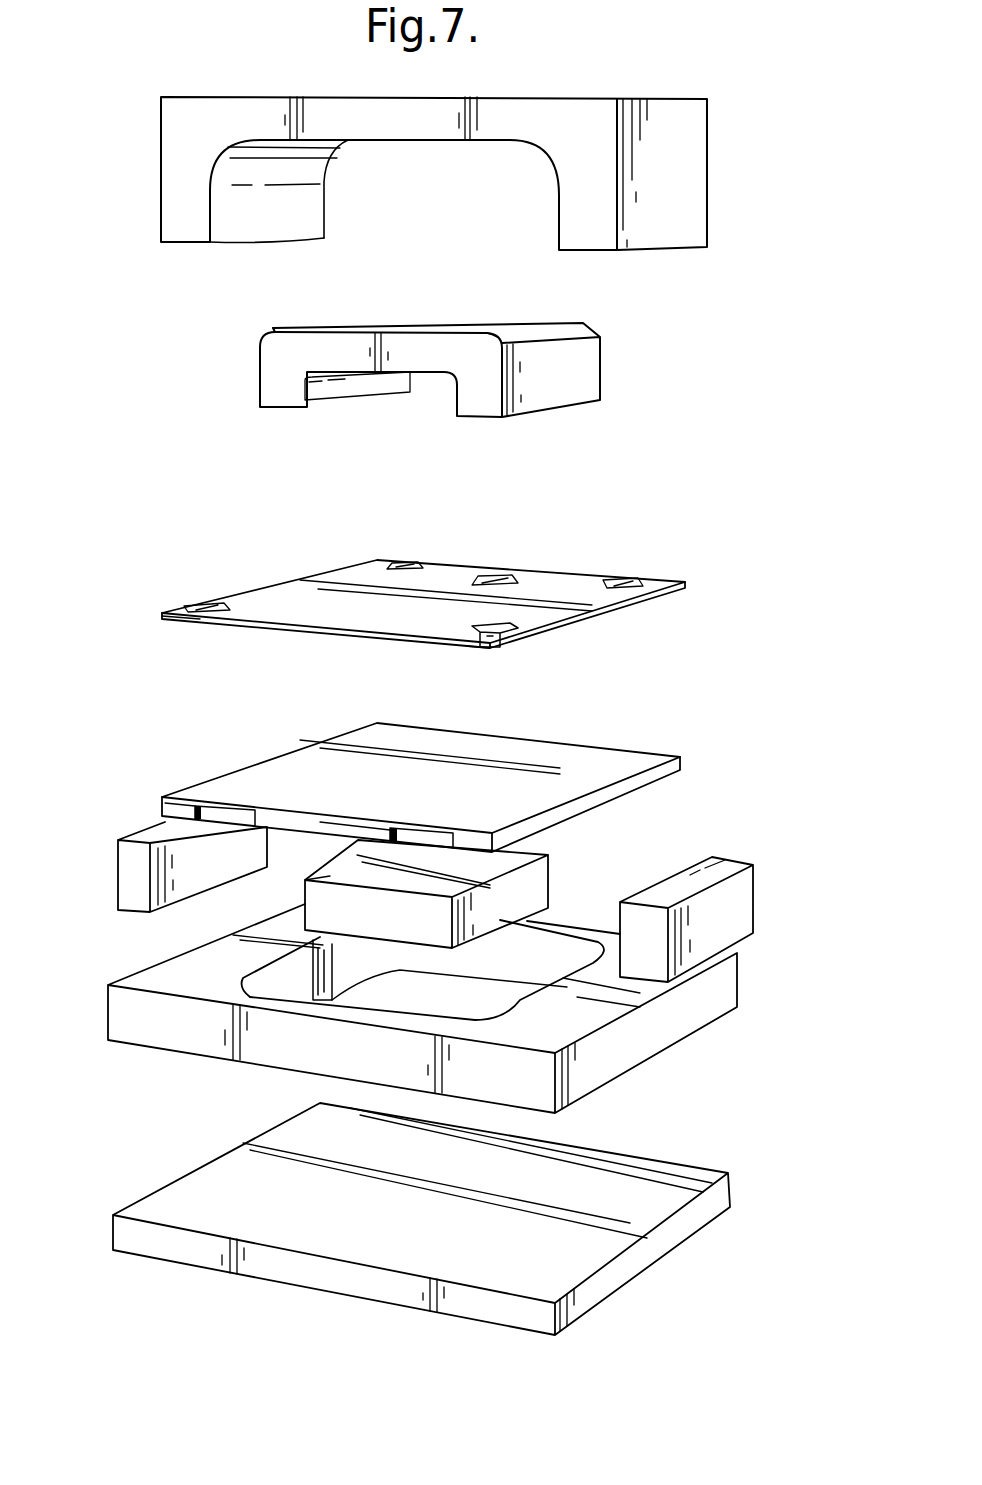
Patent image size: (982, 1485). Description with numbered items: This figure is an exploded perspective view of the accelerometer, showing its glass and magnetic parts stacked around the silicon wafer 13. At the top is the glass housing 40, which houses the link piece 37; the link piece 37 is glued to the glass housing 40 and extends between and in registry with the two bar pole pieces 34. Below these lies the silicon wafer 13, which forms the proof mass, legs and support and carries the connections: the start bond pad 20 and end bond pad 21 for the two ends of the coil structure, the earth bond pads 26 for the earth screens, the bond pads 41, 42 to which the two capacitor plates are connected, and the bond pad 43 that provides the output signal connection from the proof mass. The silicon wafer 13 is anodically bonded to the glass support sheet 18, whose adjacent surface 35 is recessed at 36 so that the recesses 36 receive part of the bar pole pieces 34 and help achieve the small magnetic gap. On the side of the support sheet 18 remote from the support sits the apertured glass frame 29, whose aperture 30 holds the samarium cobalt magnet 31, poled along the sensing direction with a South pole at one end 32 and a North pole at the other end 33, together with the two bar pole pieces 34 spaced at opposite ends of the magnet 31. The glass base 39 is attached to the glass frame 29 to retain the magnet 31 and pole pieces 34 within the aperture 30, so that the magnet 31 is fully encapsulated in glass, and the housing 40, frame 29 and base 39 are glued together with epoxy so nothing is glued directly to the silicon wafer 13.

The silicon wafer 13 is at (594, 562).
The support sheet 18 is at (620, 755).
The start bond pad 20 is at (507, 577).
The end bond pad 21 is at (627, 580).
The earth bond pads 26 is at (208, 622).
The apertured glass frame 29 is at (727, 985).
The aperture 30 is at (408, 1004).
The magnet 31 is at (388, 925).
The one end of magnet 32 is at (537, 893).
The other end of magnet 33 is at (333, 855).
The bar pole pieces 34 is at (118, 868).
The adjacent surface of support sheet 35 is at (295, 818).
The recesses 36 is at (230, 810).
The link piece 37 is at (585, 370).
The glass base 39 is at (728, 1198).
The glass housing 40 is at (697, 168).
The bond pad 41 is at (510, 638).
The bond pad 42 is at (210, 604).
The bond pad 43 is at (407, 563).